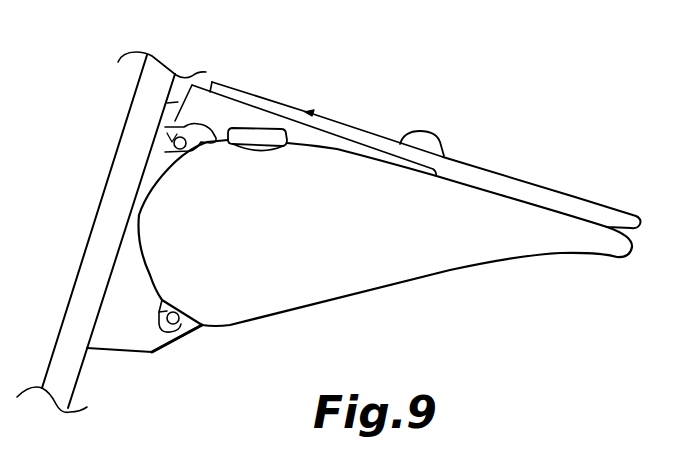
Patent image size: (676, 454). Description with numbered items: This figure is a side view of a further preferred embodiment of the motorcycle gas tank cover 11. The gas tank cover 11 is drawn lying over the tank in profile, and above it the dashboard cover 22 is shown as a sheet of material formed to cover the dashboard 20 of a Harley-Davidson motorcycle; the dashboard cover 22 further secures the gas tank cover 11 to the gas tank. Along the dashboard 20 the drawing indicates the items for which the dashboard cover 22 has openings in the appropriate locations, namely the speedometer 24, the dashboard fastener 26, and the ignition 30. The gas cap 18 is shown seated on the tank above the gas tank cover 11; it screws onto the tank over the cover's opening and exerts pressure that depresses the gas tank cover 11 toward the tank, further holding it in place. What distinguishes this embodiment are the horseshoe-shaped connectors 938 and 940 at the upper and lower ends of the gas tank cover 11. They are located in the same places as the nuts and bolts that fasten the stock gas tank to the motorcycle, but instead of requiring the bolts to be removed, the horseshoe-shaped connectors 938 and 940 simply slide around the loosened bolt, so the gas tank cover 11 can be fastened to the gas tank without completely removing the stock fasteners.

The gas tank cover 11 is at (437, 258).
The gas cap 18 is at (247, 132).
The dashboard 20 is at (230, 111).
The dashboard cover 22 is at (523, 186).
The speedometer 24 is at (281, 101).
The dashboard fastener 26 is at (313, 110).
The ignition 30 is at (421, 130).
The horseshoe-shaped connector 938 is at (167, 132).
The horseshoe-shaped connector 940 is at (174, 328).